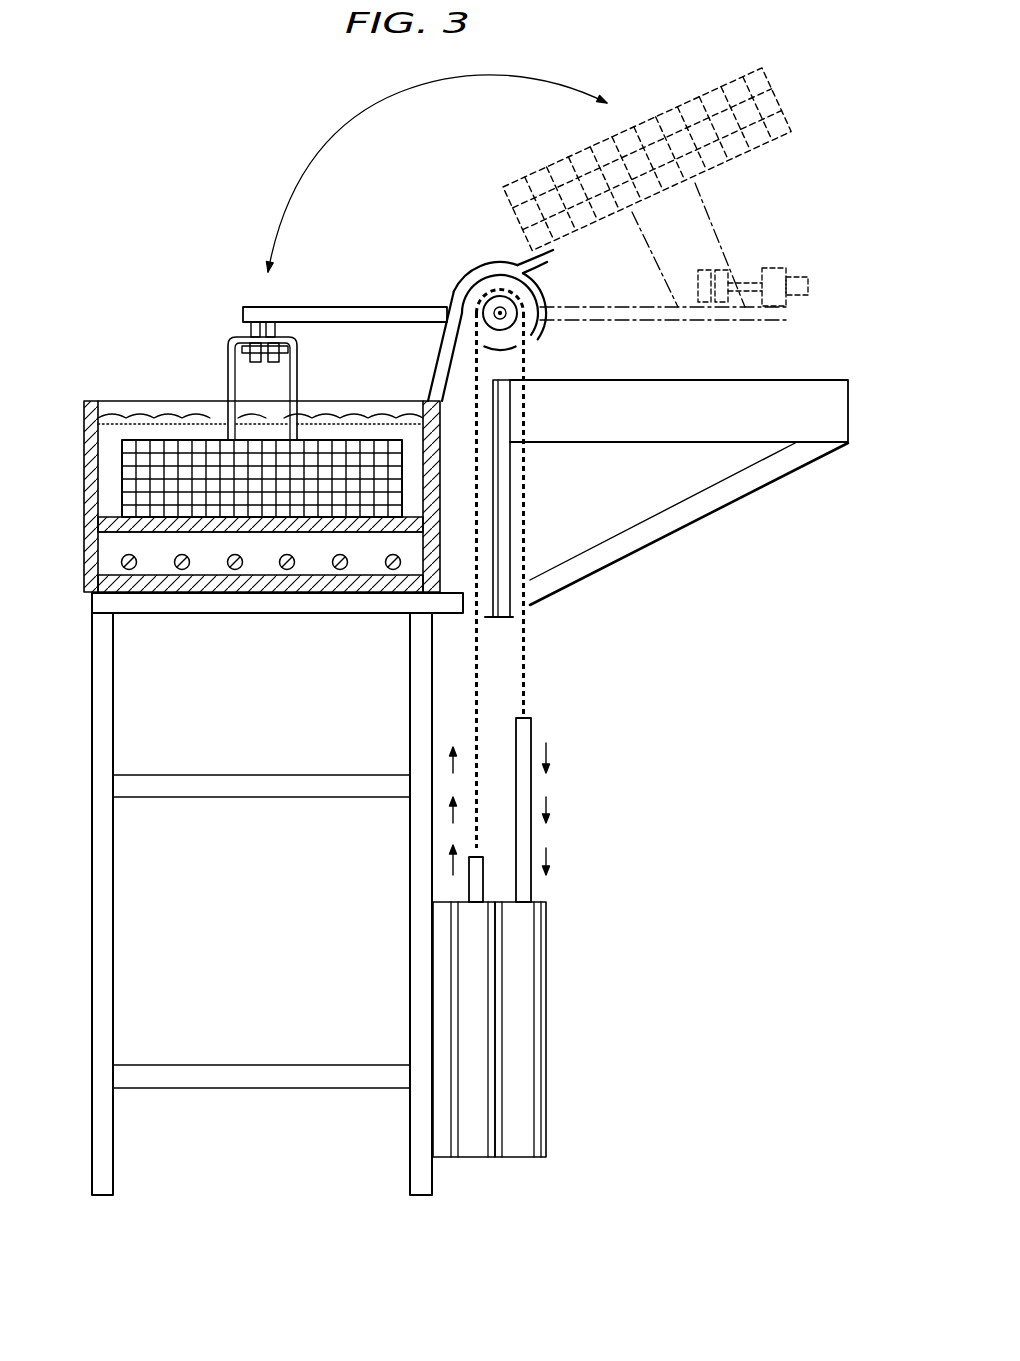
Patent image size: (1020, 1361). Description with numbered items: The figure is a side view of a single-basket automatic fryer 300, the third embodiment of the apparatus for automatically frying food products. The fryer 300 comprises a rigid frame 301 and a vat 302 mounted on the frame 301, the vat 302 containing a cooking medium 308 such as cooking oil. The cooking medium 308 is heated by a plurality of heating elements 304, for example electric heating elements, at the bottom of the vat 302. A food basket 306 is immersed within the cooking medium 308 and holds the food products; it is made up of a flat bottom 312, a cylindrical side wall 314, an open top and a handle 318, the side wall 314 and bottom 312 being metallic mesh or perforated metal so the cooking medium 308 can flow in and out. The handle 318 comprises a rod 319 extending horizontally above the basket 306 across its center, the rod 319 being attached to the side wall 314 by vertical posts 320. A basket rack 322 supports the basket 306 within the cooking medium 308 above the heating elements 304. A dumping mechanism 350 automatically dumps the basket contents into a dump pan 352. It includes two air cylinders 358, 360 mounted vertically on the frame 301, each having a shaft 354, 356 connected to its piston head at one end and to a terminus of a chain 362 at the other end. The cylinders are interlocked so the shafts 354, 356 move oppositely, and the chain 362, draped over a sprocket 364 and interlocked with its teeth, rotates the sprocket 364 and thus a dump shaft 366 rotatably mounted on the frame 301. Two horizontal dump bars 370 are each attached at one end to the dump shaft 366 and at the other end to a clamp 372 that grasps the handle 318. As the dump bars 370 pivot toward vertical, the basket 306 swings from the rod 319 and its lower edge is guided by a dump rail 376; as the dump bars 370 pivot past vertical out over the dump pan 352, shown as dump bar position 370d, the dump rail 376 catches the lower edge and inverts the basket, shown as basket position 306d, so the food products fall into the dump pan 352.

The single-basket automatic fryer 300 is at (211, 104).
The rigid frame 301 is at (113, 1150).
The vat 302 is at (97, 522).
The heating elements 304 is at (232, 566).
The food basket 306 is at (112, 465).
The basket position 306d is at (770, 88).
The cooking medium 308 is at (363, 567).
The flat bottom 312 is at (143, 524).
The cylindrical side wall 314 is at (115, 445).
The handle 318 is at (217, 382).
The rod 319 is at (250, 330).
The vertical posts 320 is at (228, 346).
The basket rack 322 is at (307, 524).
The dumping mechanism 350 is at (461, 218).
The dump pan 352 is at (718, 379).
The shaft 354 is at (468, 885).
The shaft 356 is at (532, 728).
The air cylinder 358 is at (472, 1147).
The air cylinder 360 is at (520, 1147).
The chain 362 is at (527, 357).
The sprocket 364 is at (481, 300).
The dump shaft 366 is at (512, 308).
The dump bar 370 is at (242, 294).
The dump bar position 370d is at (762, 322).
The clamp 372 is at (286, 350).
The dump rail 376 is at (436, 368).